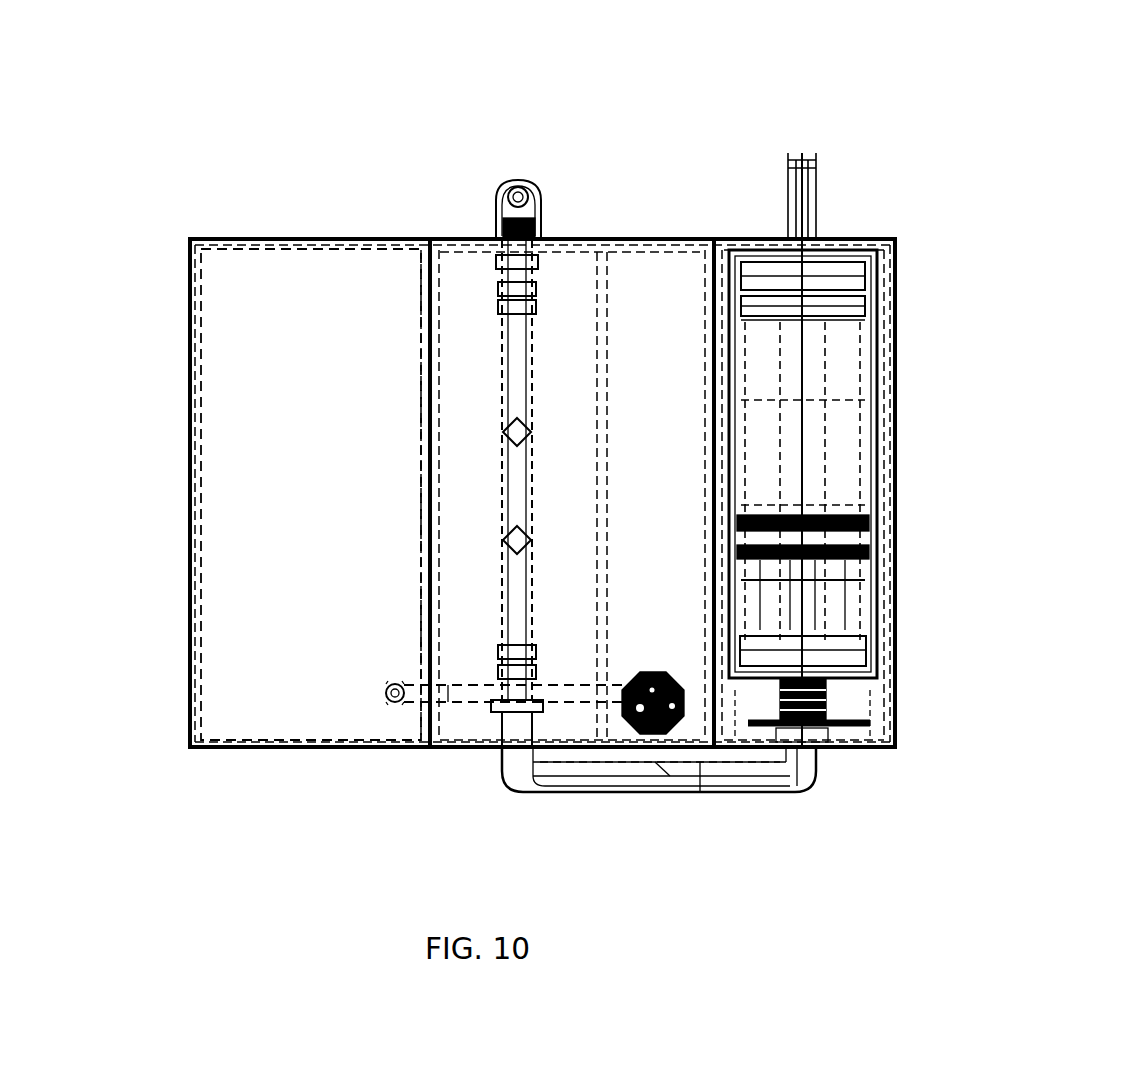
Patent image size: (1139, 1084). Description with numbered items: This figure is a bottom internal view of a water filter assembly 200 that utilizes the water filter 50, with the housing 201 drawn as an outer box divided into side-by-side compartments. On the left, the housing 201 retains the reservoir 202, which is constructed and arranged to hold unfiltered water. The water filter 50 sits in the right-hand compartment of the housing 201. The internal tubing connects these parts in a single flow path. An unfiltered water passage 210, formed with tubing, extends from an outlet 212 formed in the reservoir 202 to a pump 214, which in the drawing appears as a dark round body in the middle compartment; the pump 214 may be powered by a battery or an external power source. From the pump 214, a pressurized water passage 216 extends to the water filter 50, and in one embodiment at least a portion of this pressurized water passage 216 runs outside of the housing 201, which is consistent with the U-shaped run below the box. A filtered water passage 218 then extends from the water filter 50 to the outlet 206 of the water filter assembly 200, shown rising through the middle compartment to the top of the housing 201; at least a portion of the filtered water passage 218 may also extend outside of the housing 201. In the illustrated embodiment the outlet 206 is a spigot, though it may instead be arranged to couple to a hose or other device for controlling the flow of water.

The water filter assembly 200 is at (1052, 66).
The housing 201 is at (897, 291).
The reservoir 202 is at (245, 650).
The outlet 206 is at (537, 201).
The unfiltered water passage 210 is at (458, 693).
The outlet 212 is at (388, 699).
The pump 214 is at (652, 680).
The pressurized water passage 216 is at (810, 770).
The filtered water passage 218 is at (522, 485).
The water filter 50 is at (868, 426).